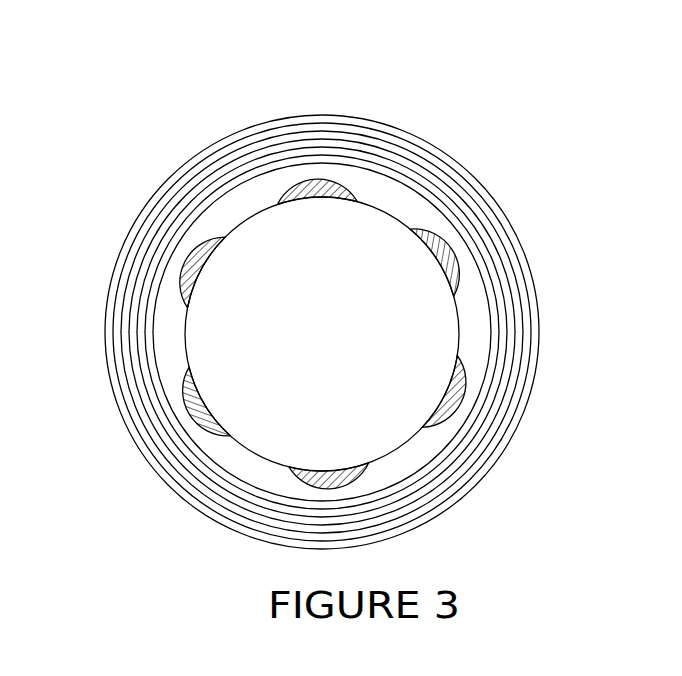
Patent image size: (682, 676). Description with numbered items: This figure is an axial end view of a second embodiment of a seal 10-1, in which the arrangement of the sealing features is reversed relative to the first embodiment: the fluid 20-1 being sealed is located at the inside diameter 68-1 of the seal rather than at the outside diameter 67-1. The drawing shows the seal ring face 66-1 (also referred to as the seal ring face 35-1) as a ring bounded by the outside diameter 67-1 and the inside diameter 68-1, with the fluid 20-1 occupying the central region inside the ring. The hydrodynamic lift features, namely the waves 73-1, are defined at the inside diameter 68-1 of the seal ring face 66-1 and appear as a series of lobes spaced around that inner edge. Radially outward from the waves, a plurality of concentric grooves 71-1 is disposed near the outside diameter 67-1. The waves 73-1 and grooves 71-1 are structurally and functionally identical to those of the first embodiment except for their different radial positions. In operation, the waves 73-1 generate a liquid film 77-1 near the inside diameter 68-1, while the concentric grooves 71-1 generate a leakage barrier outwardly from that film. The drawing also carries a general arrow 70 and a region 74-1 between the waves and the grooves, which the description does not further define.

The seal 10-1 is at (78, 140).
The seal ring face 66-1 is at (272, 127).
The seal ring face 35-1 is at (367, 295).
The outside diameter 67-1 is at (368, 123).
The concentric grooves 71-1 is at (462, 208).
The annular gap 74-1 is at (467, 322).
The liquid film 77-1 is at (226, 197).
The core 70 is at (400, 207).
The inside diameter 68-1 is at (253, 453).
The fluid 20-1 is at (332, 348).
The waves 73-1 is at (322, 196).